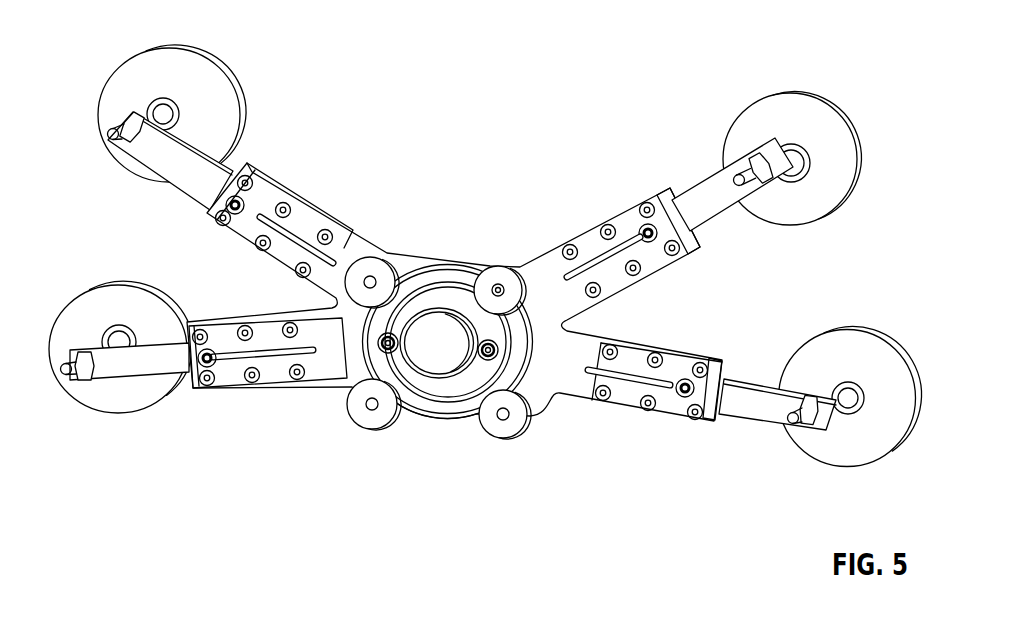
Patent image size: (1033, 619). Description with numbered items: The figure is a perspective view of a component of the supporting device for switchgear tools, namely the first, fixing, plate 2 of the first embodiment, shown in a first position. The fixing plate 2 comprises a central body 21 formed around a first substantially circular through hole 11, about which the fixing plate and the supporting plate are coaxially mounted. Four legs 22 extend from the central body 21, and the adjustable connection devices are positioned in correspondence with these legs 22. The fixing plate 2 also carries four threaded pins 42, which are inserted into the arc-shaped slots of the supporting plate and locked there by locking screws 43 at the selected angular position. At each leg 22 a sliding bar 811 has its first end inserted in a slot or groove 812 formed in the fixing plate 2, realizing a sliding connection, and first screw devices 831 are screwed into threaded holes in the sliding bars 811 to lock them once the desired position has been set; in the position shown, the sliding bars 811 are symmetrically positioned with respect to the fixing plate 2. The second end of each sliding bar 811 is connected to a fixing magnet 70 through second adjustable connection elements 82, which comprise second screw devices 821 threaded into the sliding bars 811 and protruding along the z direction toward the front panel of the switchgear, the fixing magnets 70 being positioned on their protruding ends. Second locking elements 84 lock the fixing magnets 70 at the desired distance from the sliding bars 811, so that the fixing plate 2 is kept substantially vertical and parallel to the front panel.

The first, fixing, plate 2 is at (93, 38).
The first substantially circular through hole 11 is at (445, 372).
The central body 21 is at (455, 270).
The legs 22 is at (312, 205).
The threaded pins 42 is at (500, 418).
The locking screws 43 is at (517, 423).
The fixing magnets 70 is at (208, 86).
The sliding bars 811 is at (713, 205).
The slot or groove 812 is at (612, 255).
The first screw devices 831 is at (647, 237).
The second screw devices 821 is at (845, 396).
The second adjustable connection elements 82 is at (865, 448).
The second locking elements 84 is at (815, 426).